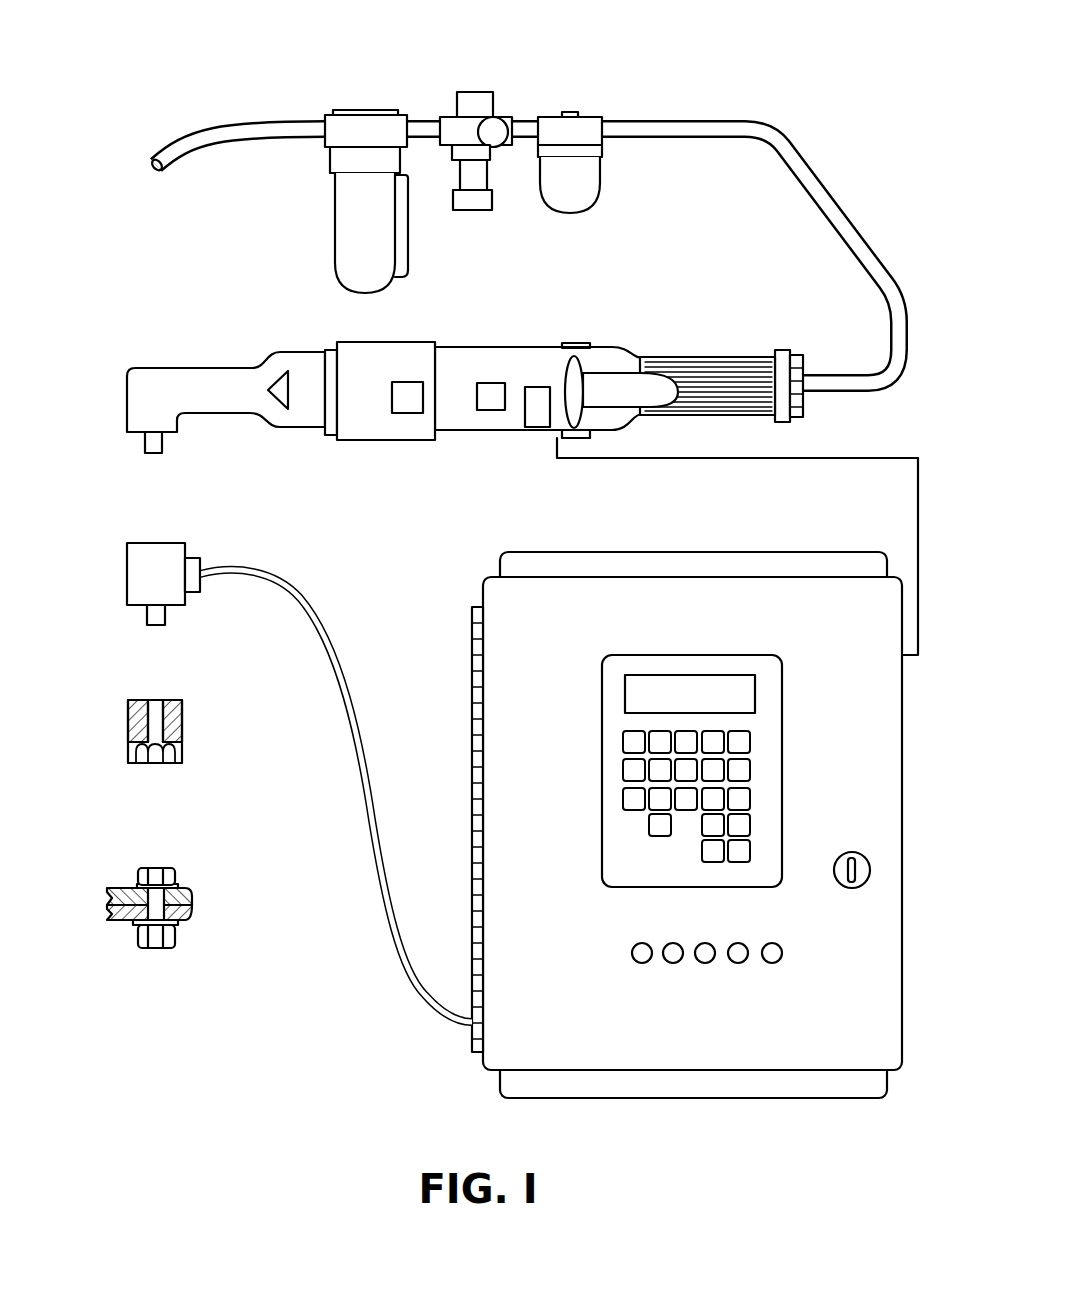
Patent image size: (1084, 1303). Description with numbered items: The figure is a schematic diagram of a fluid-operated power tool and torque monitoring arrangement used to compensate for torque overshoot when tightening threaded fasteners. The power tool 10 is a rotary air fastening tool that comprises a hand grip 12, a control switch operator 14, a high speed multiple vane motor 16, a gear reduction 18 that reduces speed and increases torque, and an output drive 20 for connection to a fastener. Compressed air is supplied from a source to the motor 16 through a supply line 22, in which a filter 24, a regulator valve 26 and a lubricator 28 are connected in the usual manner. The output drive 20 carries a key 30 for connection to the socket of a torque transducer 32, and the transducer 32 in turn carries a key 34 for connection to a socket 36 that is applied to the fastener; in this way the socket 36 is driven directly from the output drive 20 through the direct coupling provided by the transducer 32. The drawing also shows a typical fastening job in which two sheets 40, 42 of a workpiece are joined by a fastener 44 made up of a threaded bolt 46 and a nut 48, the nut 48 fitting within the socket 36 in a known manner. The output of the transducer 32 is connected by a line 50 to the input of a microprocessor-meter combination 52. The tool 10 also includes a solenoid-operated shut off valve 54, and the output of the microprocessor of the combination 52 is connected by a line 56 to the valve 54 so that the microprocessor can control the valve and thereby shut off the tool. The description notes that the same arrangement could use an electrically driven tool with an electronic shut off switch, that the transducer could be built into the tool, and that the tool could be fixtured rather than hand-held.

The power tool 10 is at (465, 396).
The hand grip 12 is at (715, 365).
The control switch operator 14 is at (658, 383).
The high speed multiple vane motor 16 is at (492, 381).
The gear reduction 18 is at (422, 414).
The output drive 20 is at (138, 390).
The supply line 22 is at (205, 130).
The filter 24 is at (348, 132).
The regulator valve 26 is at (455, 115).
The lubricator 28 is at (543, 135).
The key 30 is at (143, 443).
The torque transducer 32 is at (125, 568).
The key 34 is at (145, 615).
The socket 36 is at (128, 718).
The sheet 40 is at (192, 890).
The sheet 42 is at (185, 922).
The fastener 44 is at (183, 901).
The threaded bolt 46 is at (183, 950).
The nut 48 is at (142, 870).
The line 50 is at (343, 670).
The microprocessor-meter combination 52 is at (470, 627).
The solenoid-operated shut off valve 54 is at (537, 429).
The line 56 is at (787, 460).